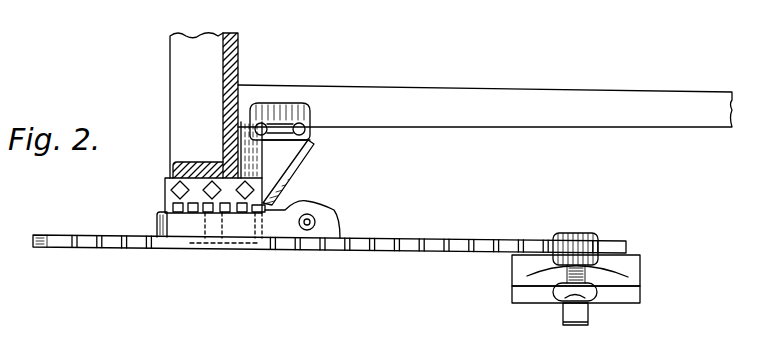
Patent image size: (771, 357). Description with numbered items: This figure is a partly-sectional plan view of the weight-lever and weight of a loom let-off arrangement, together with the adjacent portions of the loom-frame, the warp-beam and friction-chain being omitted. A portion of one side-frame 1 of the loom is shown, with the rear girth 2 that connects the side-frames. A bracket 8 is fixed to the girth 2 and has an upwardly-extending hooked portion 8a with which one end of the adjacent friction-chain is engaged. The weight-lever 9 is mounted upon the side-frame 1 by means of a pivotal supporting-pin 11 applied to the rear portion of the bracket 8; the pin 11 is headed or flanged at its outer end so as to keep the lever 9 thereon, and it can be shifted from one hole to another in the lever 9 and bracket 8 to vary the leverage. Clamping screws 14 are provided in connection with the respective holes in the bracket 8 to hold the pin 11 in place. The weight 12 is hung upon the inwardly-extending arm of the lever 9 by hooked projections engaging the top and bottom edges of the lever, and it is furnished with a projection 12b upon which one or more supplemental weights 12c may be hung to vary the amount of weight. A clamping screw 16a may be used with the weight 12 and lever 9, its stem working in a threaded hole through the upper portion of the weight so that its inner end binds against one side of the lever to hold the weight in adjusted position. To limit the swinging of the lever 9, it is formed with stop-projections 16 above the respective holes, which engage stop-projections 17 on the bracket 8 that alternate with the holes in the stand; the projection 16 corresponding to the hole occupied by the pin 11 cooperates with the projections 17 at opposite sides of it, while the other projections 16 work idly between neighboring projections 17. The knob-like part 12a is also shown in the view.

The side-frame 1 is at (240, 42).
The rear girth 2 is at (470, 86).
The bracket 8 is at (257, 167).
The hooked portion 8a is at (282, 108).
The weight-lever 9 is at (402, 240).
The pivotal supporting-pin 11 is at (215, 250).
The weight 12 is at (640, 262).
The knurled knob 12a is at (583, 233).
The projection 12b is at (615, 322).
The supplemental weight 12c is at (640, 300).
The clamping screw 14 is at (213, 183).
The stop-projection 16 is at (183, 211).
The clamping screw 16a is at (552, 296).
The stop-projection 17 is at (155, 207).